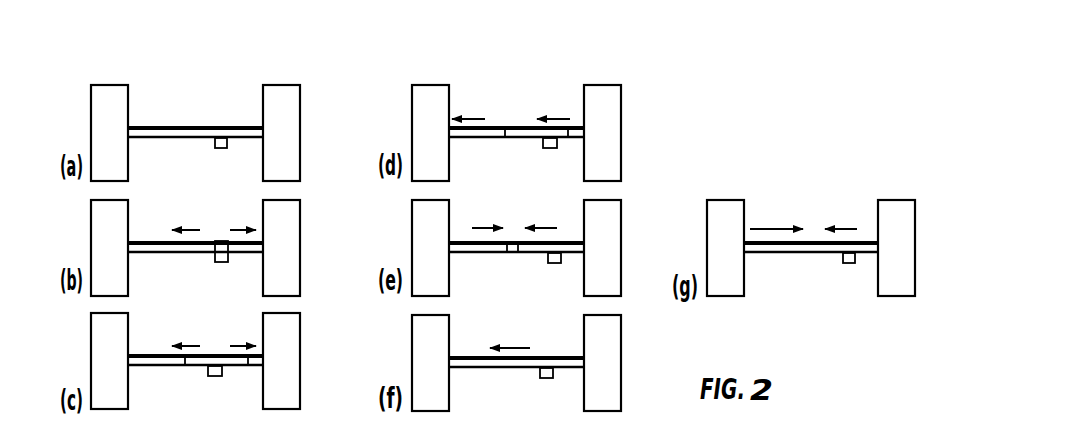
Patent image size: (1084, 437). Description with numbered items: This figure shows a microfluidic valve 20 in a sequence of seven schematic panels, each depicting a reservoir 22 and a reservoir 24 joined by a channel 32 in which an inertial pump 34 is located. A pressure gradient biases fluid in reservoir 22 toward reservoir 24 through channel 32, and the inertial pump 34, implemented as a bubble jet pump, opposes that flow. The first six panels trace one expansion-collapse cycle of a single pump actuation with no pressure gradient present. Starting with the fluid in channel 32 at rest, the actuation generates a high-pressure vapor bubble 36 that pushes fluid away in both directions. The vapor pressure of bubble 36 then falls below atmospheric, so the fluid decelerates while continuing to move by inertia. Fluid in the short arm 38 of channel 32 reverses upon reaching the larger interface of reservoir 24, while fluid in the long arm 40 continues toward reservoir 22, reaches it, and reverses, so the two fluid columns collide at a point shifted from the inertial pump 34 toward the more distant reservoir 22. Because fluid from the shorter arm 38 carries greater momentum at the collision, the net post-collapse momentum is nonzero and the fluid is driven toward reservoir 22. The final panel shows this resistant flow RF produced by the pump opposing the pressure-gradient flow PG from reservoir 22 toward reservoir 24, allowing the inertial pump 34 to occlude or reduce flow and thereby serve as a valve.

The microfluidic valve 20 is at (146, 54).
The reservoir 22 is at (91, 142).
The reservoir 24 is at (300, 130).
The channel 32 is at (170, 126).
The inertial pump 34 is at (221, 150).
The vapor bubble 36 is at (222, 241).
The short arm 38 is at (248, 254).
The long arm 40 is at (138, 241).
The propulsion gear torque PG is at (777, 229).
The regenerative force RF is at (852, 229).